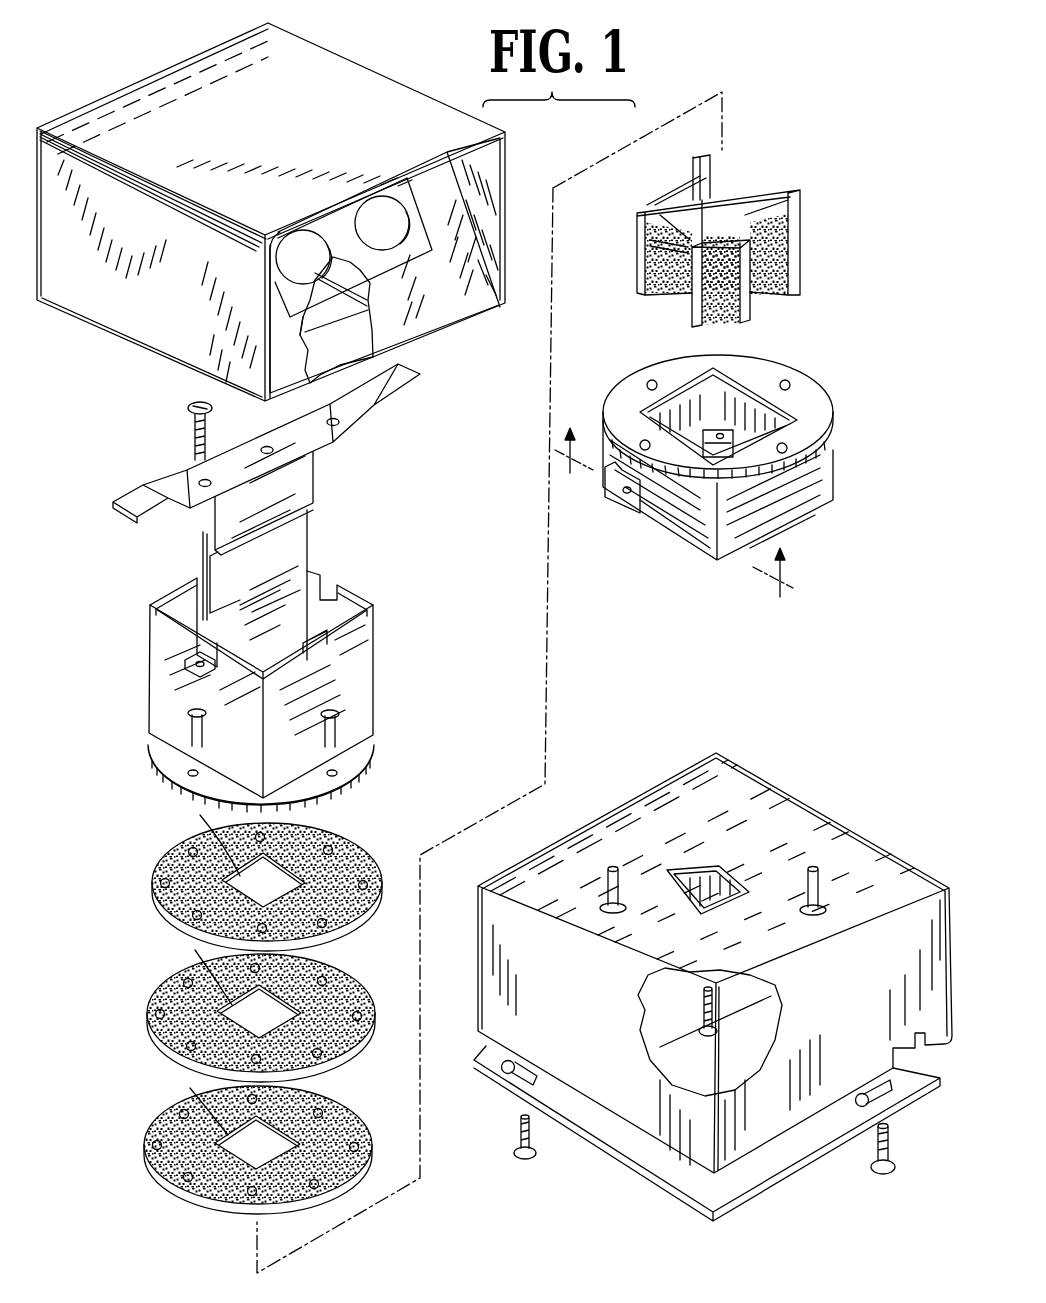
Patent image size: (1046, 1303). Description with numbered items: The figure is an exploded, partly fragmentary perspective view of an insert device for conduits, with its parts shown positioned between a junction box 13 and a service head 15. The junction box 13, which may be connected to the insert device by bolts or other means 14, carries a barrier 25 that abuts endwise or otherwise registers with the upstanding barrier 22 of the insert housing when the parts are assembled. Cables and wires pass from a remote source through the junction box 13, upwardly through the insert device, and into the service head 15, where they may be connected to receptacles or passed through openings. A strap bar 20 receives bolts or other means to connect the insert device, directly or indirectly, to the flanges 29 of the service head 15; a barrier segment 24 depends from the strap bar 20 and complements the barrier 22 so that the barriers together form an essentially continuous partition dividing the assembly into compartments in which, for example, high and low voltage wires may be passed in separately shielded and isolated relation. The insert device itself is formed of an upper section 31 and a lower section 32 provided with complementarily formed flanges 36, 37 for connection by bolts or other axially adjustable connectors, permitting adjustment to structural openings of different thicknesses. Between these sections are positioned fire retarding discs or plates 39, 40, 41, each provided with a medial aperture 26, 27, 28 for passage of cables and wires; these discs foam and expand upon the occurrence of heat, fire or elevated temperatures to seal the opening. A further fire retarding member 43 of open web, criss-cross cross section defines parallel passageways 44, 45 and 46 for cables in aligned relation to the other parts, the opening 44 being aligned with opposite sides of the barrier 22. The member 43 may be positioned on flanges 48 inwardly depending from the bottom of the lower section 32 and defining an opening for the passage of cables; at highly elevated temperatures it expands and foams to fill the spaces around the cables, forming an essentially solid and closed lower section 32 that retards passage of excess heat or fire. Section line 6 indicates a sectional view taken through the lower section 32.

The junction box 13 is at (562, 1018).
The bolt means 14 is at (525, 1166).
The service head 15 is at (249, 128).
The strap bar 20 is at (355, 415).
The upstanding barrier 22 is at (210, 578).
The barrier segment 24 is at (247, 515).
The barrier 25 is at (745, 884).
The medial aperture 26 is at (240, 876).
The medial aperture 27 is at (232, 1005).
The medial aperture 28 is at (228, 1135).
The flanges 29 is at (347, 350).
The upper section 31 is at (353, 687).
The lower section 32 is at (817, 481).
The flange 36 is at (353, 763).
The flange 37 is at (800, 390).
The fire retarding disc 39 is at (340, 860).
The fire retarding disc 40 is at (325, 993).
The fire retarding disc 41 is at (312, 1135).
The fire retarding member 43 is at (742, 216).
The passageway 44 is at (747, 190).
The passageway 45 is at (637, 262).
The passageway 46 is at (740, 180).
The flanges 48 is at (625, 507).
The section line 6- 6 is at (675, 498).